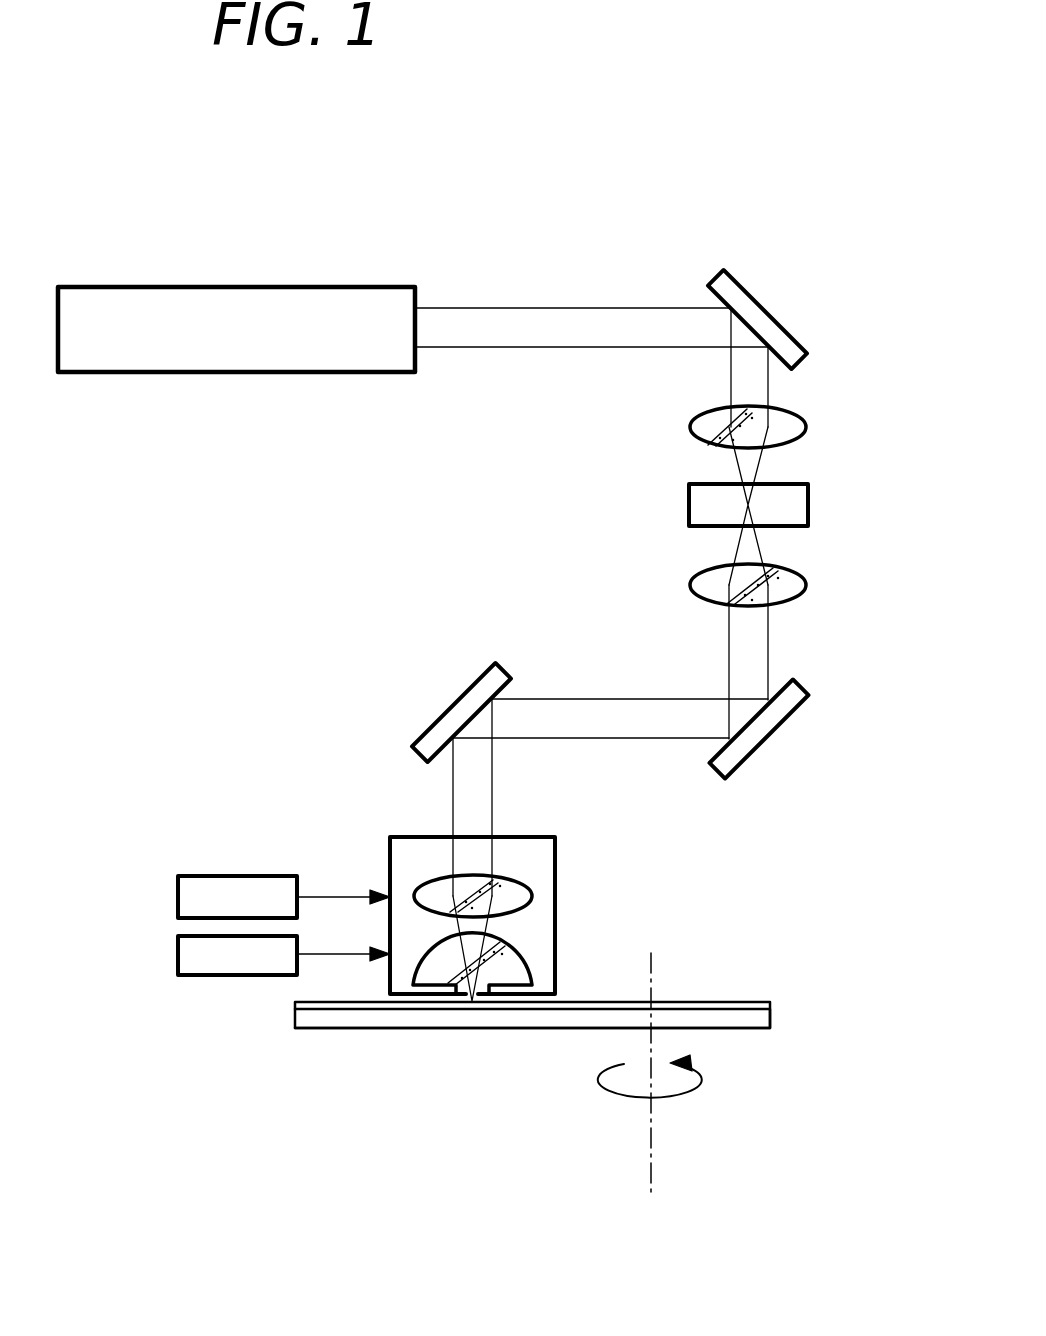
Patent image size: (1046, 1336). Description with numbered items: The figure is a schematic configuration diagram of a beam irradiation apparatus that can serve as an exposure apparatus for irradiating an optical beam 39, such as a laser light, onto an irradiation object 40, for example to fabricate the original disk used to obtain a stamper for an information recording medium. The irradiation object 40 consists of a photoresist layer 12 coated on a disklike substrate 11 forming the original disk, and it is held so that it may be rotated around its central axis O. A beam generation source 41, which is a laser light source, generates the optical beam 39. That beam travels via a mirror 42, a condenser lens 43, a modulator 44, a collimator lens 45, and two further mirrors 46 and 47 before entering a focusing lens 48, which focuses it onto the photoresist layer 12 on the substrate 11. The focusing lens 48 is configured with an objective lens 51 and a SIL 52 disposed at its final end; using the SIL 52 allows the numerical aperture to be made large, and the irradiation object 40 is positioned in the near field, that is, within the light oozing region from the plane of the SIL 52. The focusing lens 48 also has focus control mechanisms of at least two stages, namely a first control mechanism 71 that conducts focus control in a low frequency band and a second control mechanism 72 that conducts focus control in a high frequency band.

The substrate 11 is at (748, 1028).
The photoresist layer 12 is at (745, 1002).
The optical beam 39 is at (488, 308).
The irradiation object 40 is at (453, 1028).
The beam generation source 41 is at (205, 287).
The mirror 42 is at (772, 311).
The condenser lens 43 is at (806, 428).
The modulator 44 is at (808, 503).
The collimator lens 45 is at (806, 585).
The mirror 46 is at (797, 713).
The mirror 47 is at (453, 700).
The focusing lens 48 is at (555, 852).
The objective lens 51 is at (532, 896).
The SIL 52 is at (527, 962).
The first control mechanism 71 is at (243, 876).
The second control mechanism 72 is at (238, 975).
The central axis O is at (651, 1160).